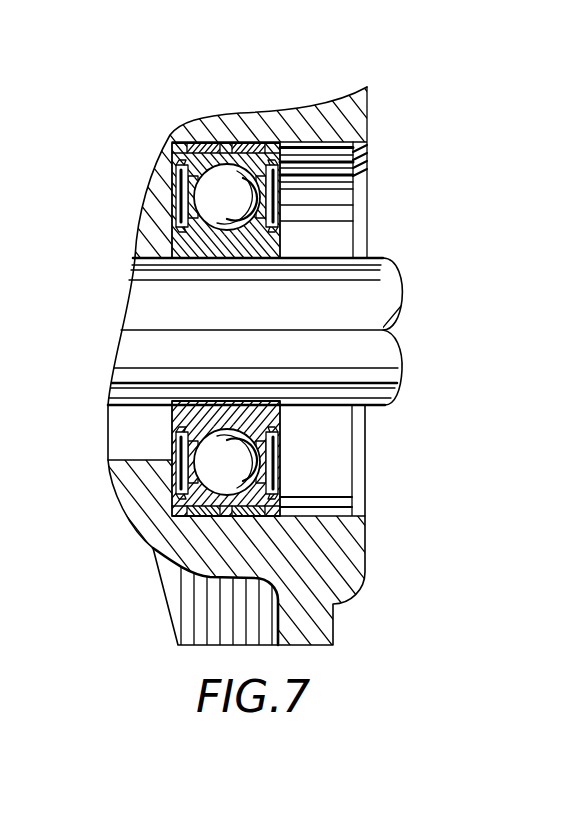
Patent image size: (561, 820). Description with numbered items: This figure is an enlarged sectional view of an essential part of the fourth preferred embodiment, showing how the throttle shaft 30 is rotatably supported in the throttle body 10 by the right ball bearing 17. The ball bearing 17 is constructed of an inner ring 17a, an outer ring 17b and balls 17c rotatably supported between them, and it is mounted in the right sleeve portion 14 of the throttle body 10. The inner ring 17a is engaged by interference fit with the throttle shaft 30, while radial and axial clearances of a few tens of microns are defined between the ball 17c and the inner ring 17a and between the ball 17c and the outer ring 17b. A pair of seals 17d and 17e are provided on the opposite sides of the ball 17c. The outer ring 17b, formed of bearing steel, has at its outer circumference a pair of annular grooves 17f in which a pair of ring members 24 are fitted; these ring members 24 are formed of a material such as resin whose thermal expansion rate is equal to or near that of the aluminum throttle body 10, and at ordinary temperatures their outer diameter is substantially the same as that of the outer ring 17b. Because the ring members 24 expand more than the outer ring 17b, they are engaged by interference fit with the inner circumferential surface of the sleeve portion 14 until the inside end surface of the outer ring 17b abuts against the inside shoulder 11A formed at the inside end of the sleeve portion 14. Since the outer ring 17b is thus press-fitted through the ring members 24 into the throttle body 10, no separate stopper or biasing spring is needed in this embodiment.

The throttle body 10 is at (342, 100).
The inside shoulder 11A is at (142, 489).
The right sleeve portion 14 is at (200, 518).
The right ball bearing 17 is at (209, 148).
The inner ring 17a is at (163, 254).
The outer ring 17b is at (178, 165).
The ball 17c is at (227, 197).
The seal 17d is at (172, 217).
The seal 17e is at (287, 197).
The annular groove 17f is at (205, 138).
The ring member 24 is at (184, 138).
The throttle shaft 30 is at (128, 345).